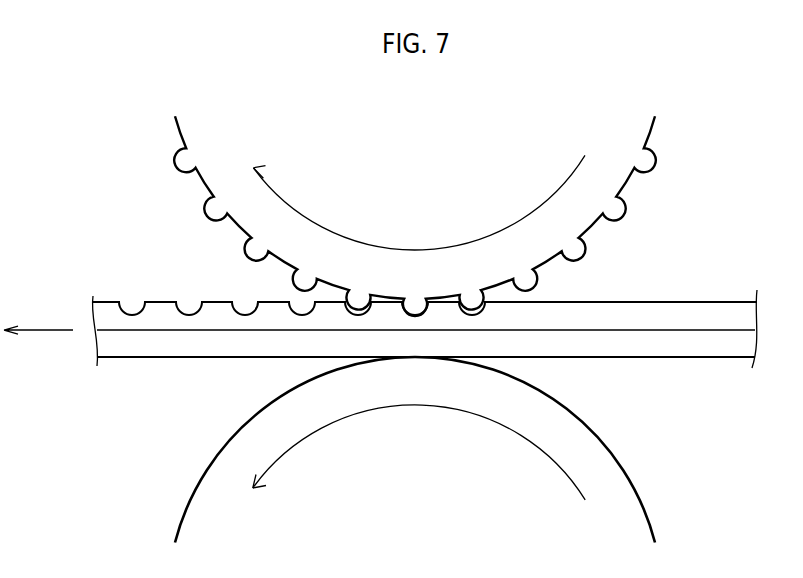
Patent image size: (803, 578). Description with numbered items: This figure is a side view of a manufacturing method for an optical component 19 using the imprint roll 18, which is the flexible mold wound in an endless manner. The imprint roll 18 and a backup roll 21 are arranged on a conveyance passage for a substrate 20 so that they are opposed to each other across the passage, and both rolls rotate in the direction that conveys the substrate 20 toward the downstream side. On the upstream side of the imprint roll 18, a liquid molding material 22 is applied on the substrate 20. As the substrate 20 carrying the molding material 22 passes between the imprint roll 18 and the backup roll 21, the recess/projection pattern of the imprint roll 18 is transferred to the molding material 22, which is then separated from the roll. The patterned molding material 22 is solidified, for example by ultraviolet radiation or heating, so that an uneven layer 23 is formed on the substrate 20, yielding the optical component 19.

The imprint roll 18 is at (577, 218).
The optical component 19 is at (380, 316).
The substrate 20 is at (700, 345).
The backup roll 21 is at (580, 440).
The liquid molding material 22 is at (700, 315).
The uneven layer 23 is at (161, 313).